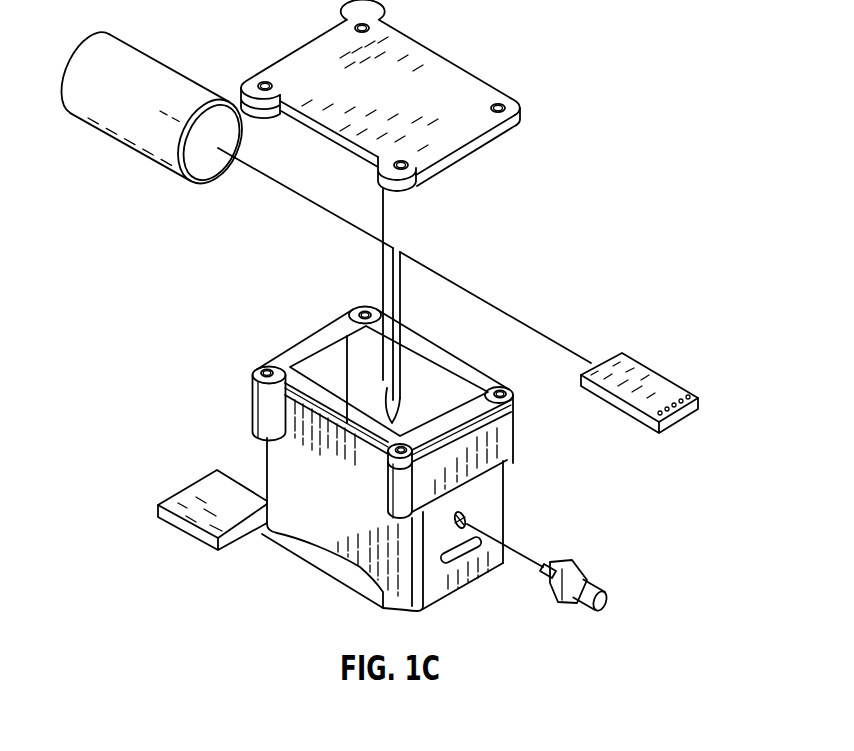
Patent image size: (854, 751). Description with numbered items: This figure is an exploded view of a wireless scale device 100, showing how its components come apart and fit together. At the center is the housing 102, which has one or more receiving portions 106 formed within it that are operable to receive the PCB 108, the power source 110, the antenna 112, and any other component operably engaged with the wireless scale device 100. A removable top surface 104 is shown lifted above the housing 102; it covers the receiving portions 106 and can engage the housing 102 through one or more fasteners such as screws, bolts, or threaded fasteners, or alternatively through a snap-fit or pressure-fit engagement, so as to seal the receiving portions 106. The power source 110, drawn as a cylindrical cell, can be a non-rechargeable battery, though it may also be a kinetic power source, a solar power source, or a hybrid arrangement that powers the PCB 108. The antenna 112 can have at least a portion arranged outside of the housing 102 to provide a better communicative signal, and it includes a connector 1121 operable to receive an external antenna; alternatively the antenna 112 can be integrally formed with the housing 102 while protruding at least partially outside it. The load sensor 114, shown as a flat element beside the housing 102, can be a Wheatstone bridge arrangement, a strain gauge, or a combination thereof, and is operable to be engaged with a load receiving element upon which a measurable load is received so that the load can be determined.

The wireless scale device 100 is at (558, 47).
The housing 102 is at (504, 512).
The top surface 104 is at (412, 63).
The receiving portions 106 is at (335, 367).
The PCB 108 is at (660, 374).
The power source 110 is at (147, 43).
The antenna 112 is at (637, 512).
The connector 1121 is at (571, 566).
The load sensor 114 is at (218, 552).